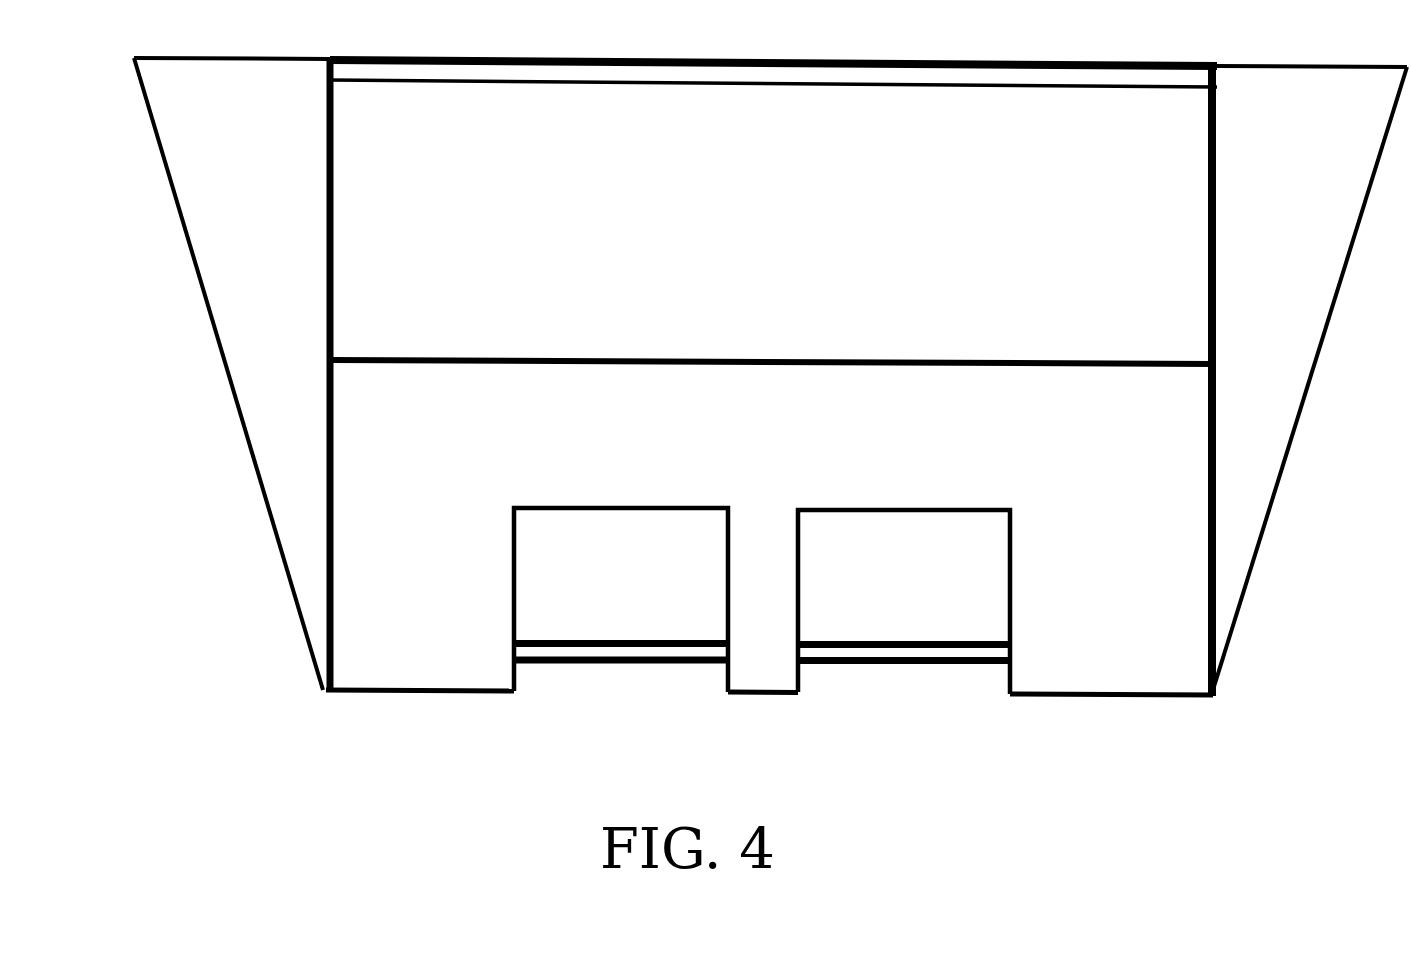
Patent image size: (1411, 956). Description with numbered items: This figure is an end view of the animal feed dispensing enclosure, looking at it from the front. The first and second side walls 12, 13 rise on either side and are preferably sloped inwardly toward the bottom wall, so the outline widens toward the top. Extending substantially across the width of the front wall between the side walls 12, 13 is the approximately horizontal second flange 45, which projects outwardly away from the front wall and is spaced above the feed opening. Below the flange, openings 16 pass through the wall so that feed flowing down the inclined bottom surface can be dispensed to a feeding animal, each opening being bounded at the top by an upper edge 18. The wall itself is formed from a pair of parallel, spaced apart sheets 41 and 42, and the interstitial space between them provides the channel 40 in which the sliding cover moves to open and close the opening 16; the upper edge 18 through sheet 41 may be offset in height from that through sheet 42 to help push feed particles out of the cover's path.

The first side wall 12 is at (245, 431).
The second side wall 13 is at (1280, 493).
The second flange 45 is at (435, 356).
The upper edge of the opening 18 is at (571, 509).
The opening 16 is at (894, 577).
The sheet 41 is at (633, 646).
The sheet 42 is at (702, 663).
The channel 40 is at (971, 652).